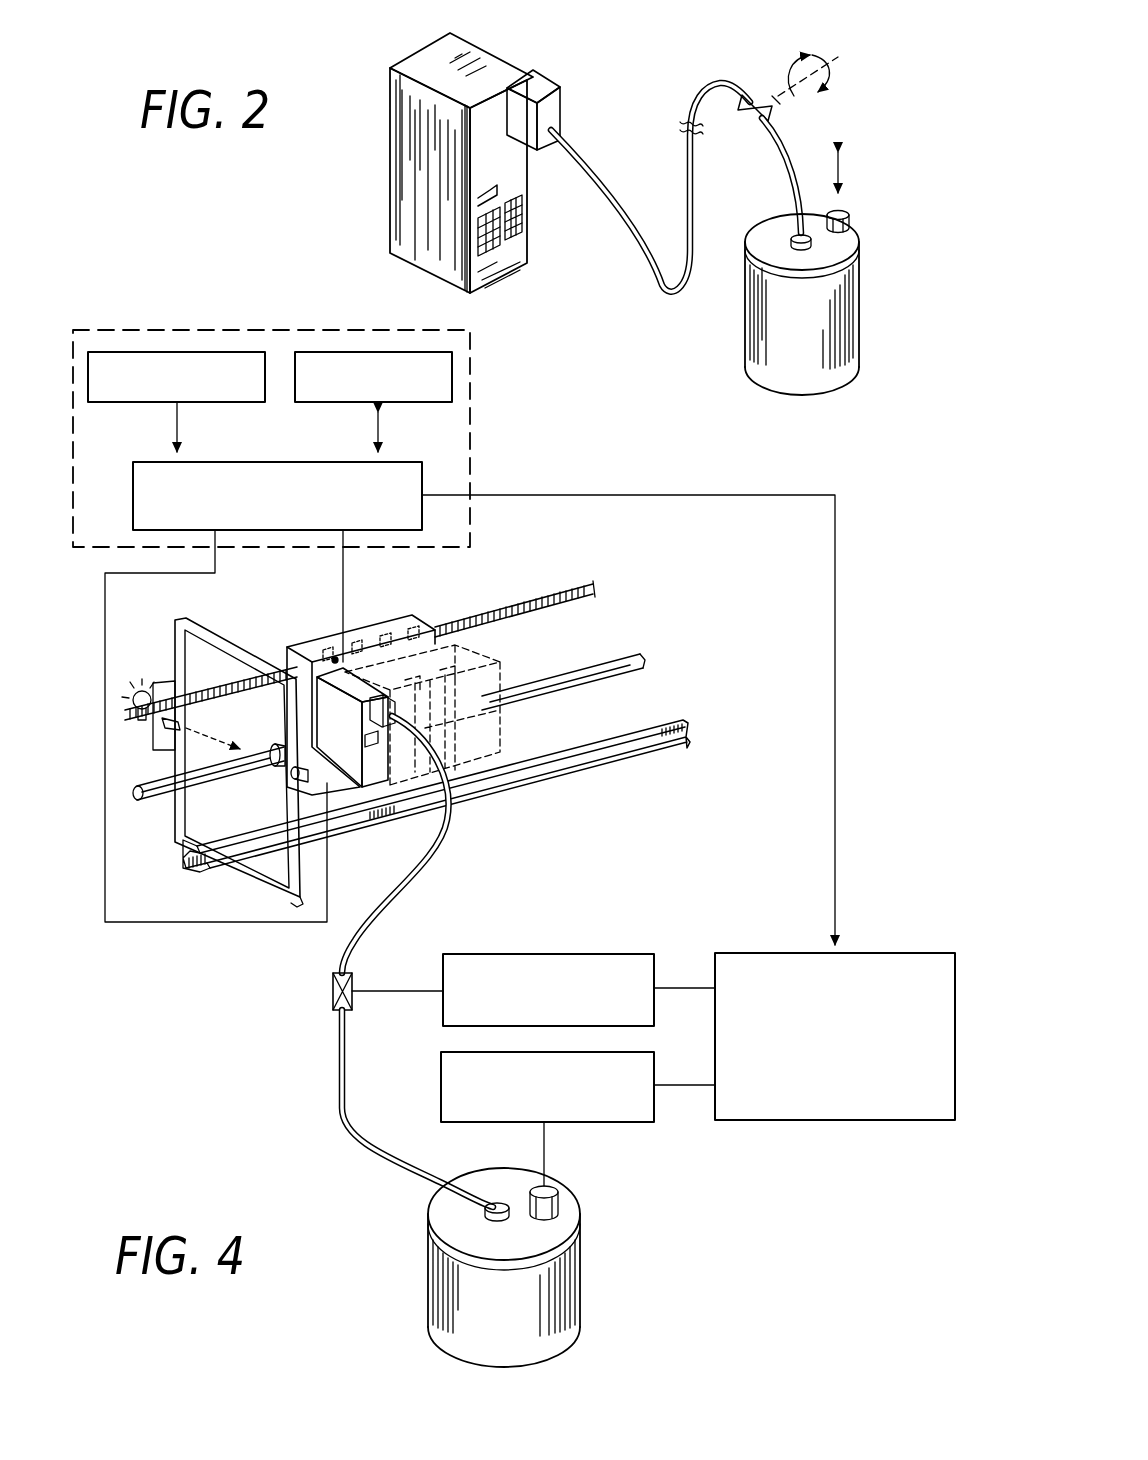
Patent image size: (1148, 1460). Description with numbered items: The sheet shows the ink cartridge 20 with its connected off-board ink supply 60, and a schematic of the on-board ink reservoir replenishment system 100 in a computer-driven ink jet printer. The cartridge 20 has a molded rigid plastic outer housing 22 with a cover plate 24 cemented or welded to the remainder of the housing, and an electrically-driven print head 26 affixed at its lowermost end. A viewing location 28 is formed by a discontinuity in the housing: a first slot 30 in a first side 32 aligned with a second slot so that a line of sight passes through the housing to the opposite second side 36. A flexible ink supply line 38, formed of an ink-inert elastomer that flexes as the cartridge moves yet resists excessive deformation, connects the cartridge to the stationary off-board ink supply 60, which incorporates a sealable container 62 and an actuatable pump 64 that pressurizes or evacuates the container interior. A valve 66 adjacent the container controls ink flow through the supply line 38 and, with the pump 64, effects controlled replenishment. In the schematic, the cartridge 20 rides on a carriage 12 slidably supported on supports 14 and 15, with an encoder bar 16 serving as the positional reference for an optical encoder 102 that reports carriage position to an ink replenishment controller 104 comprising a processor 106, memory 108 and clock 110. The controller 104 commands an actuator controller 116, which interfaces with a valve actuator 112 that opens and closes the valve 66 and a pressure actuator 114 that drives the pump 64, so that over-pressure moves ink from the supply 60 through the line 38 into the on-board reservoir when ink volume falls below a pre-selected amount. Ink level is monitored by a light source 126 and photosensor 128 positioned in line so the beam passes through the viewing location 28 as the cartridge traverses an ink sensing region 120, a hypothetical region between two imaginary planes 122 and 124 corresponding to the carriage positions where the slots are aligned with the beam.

In FIG. 4, the carriage 12 is at (393, 673).
In FIG. 4, the support 14 is at (612, 655).
In FIG. 4, the support 15 is at (595, 770).
In FIG. 4, the encoder bar 16 is at (548, 586).
In FIG. 2, the ink cartridge 20 is at (440, 175).
In FIG. 4, the ink cartridge 20 is at (380, 765).
In FIG. 2, the outer housing 22 is at (402, 68).
In FIG. 2, the cover plate 24 is at (405, 200).
In FIG. 2, the print head 26 is at (495, 280).
In FIG. 2, the viewing location 28 is at (515, 216).
In FIG. 2, the first slot 30 is at (490, 193).
In FIG. 2, the first side 32 is at (517, 267).
In FIG. 2, the second side 36 is at (390, 150).
In FIG. 2, the ink supply line 38 is at (683, 105).
In FIG. 4, the ink supply line 38 is at (337, 1111).
In FIG. 2, the off-board ink supply 60 is at (847, 294).
In FIG. 4, the off-board ink supply 60 is at (509, 1267).
In FIG. 2, the sealable container 62 is at (828, 395).
In FIG. 4, the sealable container 62 is at (450, 1303).
In FIG. 2, the pump 64 is at (850, 222).
In FIG. 4, the pump 64 is at (559, 1203).
In FIG. 2, the valve 66 is at (753, 102).
In FIG. 4, the valve 66 is at (331, 991).
In FIG. 4, the on-board ink reservoir replenishment system 100 is at (737, 1270).
In FIG. 4, the optical encoder 102 is at (333, 657).
In FIG. 4, the ink replenishment controller 104 is at (335, 411).
In FIG. 4, the processor 106 is at (262, 462).
In FIG. 4, the memory 108 is at (452, 375).
In FIG. 4, the clock 110 is at (163, 352).
In FIG. 4, the valve actuator 112 is at (530, 954).
In FIG. 4, the pressure actuator 114 is at (586, 1122).
In FIG. 4, the actuator controller 116 is at (820, 1120).
In FIG. 4, the ink sensing region 120 is at (238, 750).
In FIG. 4, the imaginary plane 122 is at (178, 626).
In FIG. 4, the imaginary plane 124 is at (244, 656).
In FIG. 4, the light source 126 is at (168, 697).
In FIG. 4, the photosensor 128 is at (288, 786).